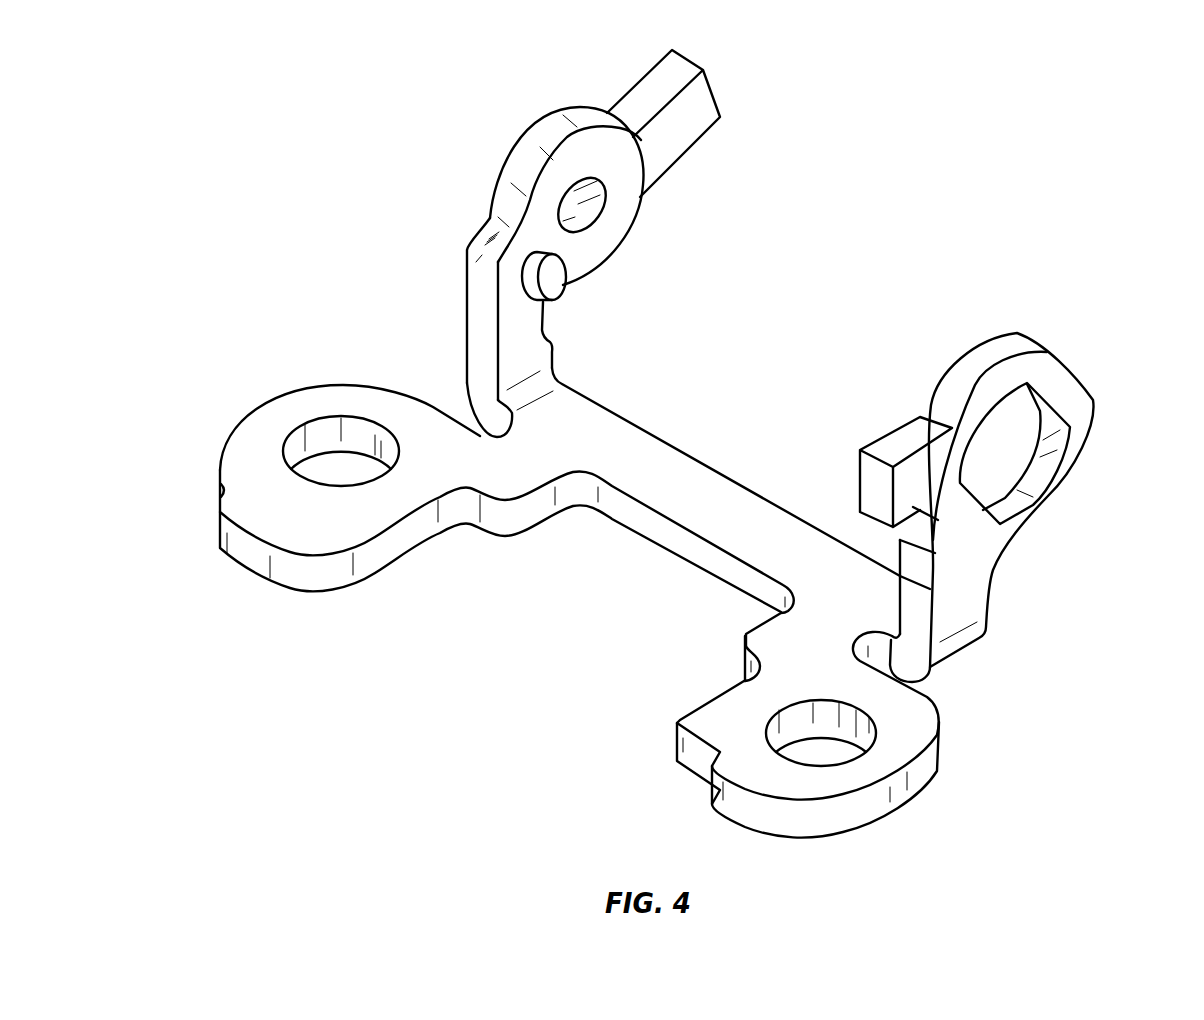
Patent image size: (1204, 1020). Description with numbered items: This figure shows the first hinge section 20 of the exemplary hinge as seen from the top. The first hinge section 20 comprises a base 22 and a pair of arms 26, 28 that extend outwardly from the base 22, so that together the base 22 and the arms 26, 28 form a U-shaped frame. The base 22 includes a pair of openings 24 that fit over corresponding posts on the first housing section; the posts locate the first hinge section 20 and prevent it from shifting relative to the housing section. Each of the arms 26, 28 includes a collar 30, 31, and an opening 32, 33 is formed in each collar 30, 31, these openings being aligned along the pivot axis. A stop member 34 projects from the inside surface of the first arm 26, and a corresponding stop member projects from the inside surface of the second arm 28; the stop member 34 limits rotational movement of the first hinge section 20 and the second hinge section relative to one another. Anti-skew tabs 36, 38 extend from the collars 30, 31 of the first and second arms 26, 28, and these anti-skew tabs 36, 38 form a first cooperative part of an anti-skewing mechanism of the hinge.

The first hinge section 20 is at (682, 445).
The base 22 is at (283, 597).
The openings 24 is at (318, 420).
The first arm 26 is at (484, 175).
The second arm 28 is at (1034, 507).
The collar 30 is at (651, 195).
The collar 31 is at (1078, 441).
The opening 32 is at (592, 224).
The opening 33 is at (1053, 487).
The stop member 34 is at (547, 287).
The anti-skew tab 36 is at (712, 98).
The anti-skew tab 38 is at (903, 440).